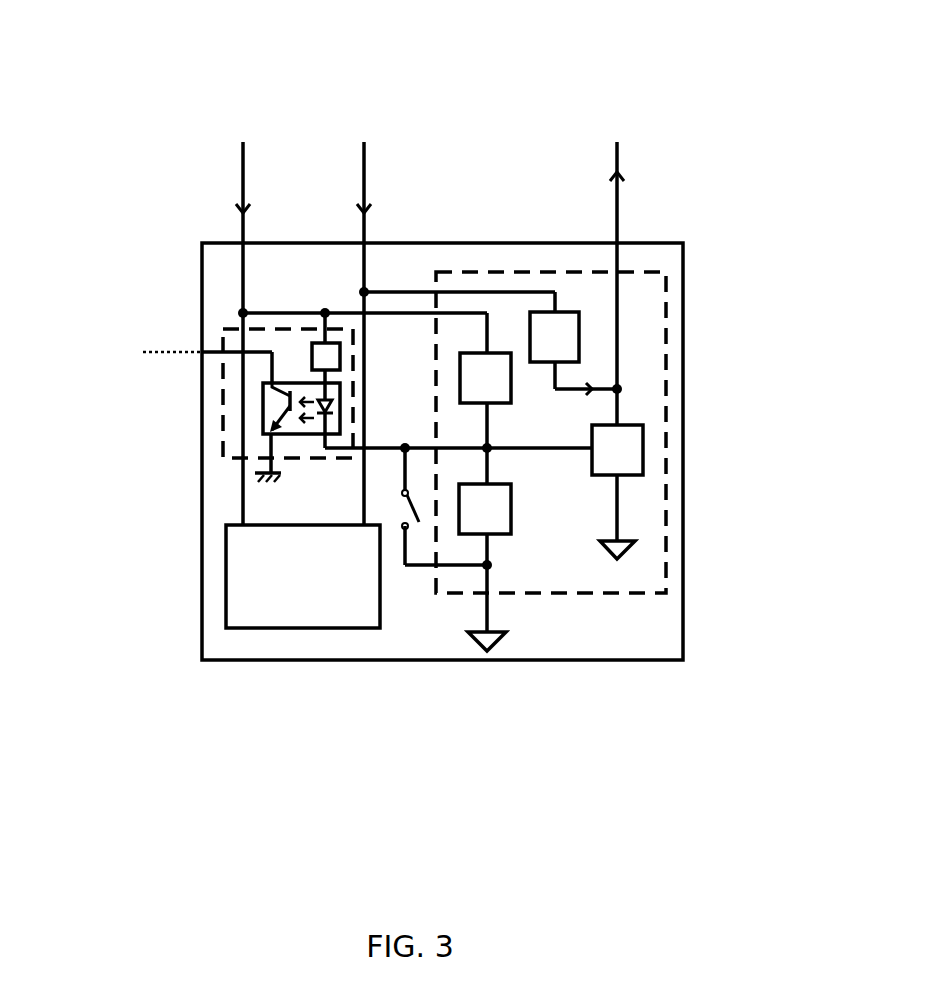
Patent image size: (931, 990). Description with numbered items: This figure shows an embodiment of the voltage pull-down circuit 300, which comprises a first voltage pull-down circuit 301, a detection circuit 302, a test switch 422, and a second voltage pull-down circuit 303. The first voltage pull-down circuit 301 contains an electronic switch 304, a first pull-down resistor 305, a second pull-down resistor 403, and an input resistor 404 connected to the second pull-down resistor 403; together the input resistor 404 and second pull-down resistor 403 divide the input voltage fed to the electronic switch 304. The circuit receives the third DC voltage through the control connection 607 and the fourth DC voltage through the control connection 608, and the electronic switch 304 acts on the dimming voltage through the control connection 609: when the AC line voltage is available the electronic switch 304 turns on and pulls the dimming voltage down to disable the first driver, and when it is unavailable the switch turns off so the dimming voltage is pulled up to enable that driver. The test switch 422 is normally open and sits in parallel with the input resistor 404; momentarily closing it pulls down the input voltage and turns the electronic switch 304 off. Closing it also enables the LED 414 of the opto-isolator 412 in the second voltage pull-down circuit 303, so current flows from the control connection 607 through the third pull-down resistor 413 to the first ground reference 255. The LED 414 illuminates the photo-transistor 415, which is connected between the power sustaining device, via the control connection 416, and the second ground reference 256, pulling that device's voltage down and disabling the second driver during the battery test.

The voltage pull-down circuit 300 is at (473, 228).
The first voltage pull-down circuit 301 is at (654, 255).
The detection circuit 302 is at (229, 645).
The second voltage pull-down circuit 303 is at (204, 392).
The electronic switch 304 is at (643, 452).
The first pull-down resistor 305 is at (565, 312).
The second pull-down resistor 403 is at (511, 403).
The input resistor 404 is at (511, 534).
The opto-isolator 412 is at (263, 430).
The third pull-down resistor 413 is at (309, 353).
The LED 414 is at (320, 400).
The photo-transistor 415 is at (283, 403).
The control connection 416 is at (143, 352).
The test switch 422 is at (403, 517).
The first ground reference 255 is at (477, 645).
The second ground reference 256 is at (257, 485).
The control connection 607 is at (243, 142).
The control connection 608 is at (364, 142).
The control connection 609 is at (617, 142).